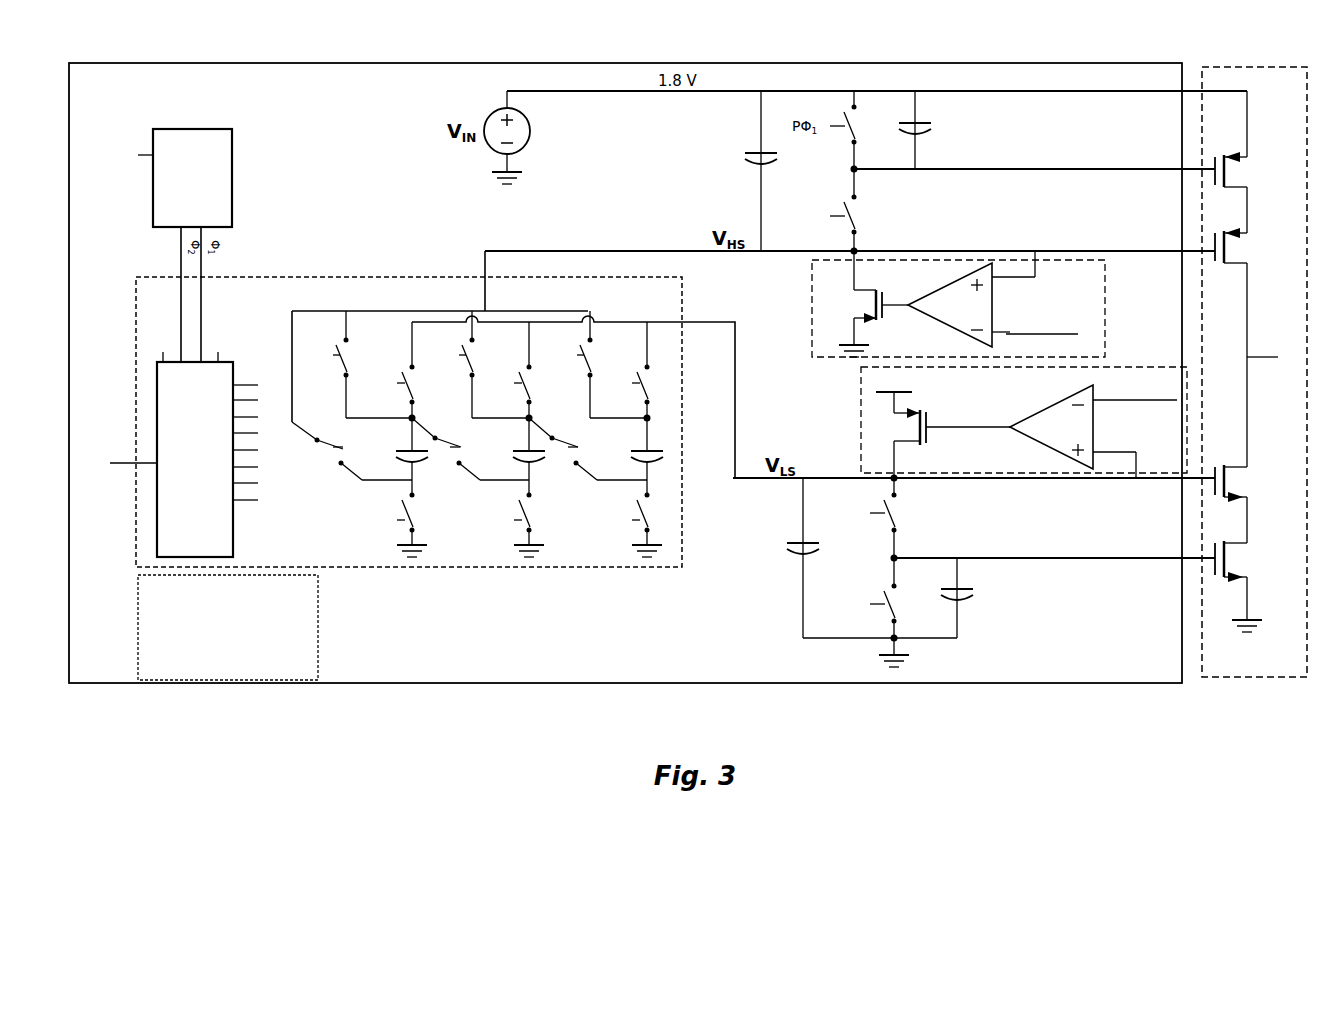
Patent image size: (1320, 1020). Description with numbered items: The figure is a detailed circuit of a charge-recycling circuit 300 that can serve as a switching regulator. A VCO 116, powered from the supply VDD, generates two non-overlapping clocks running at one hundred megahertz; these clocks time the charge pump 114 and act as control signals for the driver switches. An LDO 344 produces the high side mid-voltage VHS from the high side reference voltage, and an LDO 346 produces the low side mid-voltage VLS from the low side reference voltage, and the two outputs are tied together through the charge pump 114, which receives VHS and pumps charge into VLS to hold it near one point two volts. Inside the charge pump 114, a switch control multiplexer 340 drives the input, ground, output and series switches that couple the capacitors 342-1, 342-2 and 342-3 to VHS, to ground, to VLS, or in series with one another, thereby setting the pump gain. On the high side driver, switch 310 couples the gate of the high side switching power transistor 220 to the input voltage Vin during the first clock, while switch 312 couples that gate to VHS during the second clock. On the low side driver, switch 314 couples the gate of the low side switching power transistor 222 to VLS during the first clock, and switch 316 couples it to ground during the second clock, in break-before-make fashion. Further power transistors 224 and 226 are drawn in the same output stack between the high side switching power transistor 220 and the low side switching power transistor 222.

The charge-recycling circuit 300 is at (1152, 22).
The VCO 116 is at (232, 168).
The charge pump 114 is at (682, 567).
The switch control multiplexer 340 is at (233, 520).
The capacitor 342-1 is at (425, 462).
The capacitor 342-2 is at (542, 462).
The capacitor 342-3 is at (660, 462).
The switch 310 is at (850, 150).
The switch 312 is at (858, 213).
The switch 314 is at (897, 505).
The switch 316 is at (888, 613).
The LDO 344 is at (812, 270).
The LDO 346 is at (861, 390).
The high side switching power transistor 220 is at (1228, 172).
The second PMOS output transistor 224 is at (1228, 248).
The first NMOS output transistor 226 is at (1228, 475).
The low side switching power transistor 222 is at (1228, 555).